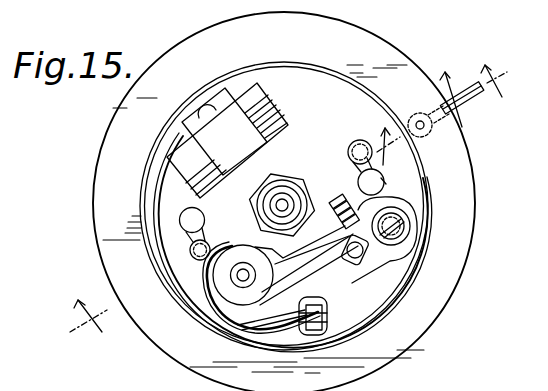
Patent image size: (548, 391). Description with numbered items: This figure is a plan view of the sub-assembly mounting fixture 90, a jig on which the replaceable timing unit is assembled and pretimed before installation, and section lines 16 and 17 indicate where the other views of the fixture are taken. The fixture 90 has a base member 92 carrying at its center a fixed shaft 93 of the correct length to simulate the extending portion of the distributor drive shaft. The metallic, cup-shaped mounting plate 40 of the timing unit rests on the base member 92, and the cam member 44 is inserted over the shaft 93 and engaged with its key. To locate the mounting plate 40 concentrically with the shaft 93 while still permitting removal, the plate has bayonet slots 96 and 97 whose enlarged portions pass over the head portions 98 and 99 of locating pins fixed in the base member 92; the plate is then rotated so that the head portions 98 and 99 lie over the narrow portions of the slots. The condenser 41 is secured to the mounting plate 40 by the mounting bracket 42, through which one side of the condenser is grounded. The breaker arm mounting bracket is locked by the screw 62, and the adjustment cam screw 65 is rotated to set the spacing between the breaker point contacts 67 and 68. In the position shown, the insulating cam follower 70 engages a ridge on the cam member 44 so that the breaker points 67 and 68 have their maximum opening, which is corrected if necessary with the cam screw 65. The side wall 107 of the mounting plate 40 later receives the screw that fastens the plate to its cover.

The mounting plate 40 is at (312, 78).
The condenser 41 is at (270, 113).
The mounting bracket 42 is at (224, 131).
The cam member 44 is at (279, 182).
The screw 62 is at (404, 233).
The adjustment cam screw 65 is at (352, 270).
The breaker point contact 67 is at (349, 242).
The breaker point contact 68 is at (340, 203).
The cam follower 70 is at (280, 279).
The sub-assembly mounting fixture 90 is at (480, 224).
The base member 92 is at (456, 258).
The fixed shaft 93 is at (280, 211).
The bayonet slot 96 is at (205, 226).
The bayonet slot 97 is at (383, 182).
The head portion 98 is at (192, 258).
The head portion 99 is at (359, 145).
The side wall 107 is at (397, 293).
The section line 16 is at (284, 218).
The section line 17 is at (455, 118).